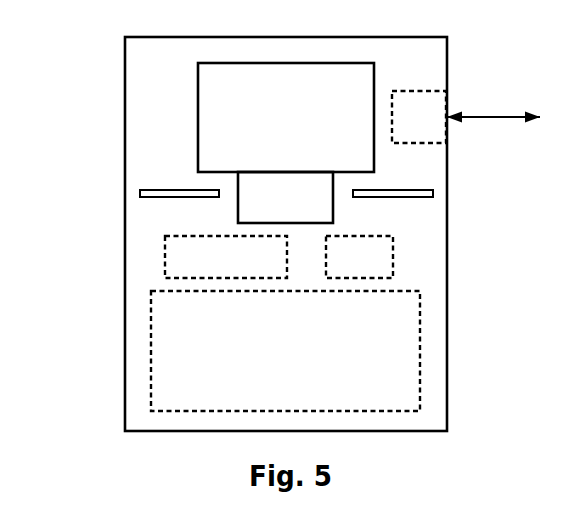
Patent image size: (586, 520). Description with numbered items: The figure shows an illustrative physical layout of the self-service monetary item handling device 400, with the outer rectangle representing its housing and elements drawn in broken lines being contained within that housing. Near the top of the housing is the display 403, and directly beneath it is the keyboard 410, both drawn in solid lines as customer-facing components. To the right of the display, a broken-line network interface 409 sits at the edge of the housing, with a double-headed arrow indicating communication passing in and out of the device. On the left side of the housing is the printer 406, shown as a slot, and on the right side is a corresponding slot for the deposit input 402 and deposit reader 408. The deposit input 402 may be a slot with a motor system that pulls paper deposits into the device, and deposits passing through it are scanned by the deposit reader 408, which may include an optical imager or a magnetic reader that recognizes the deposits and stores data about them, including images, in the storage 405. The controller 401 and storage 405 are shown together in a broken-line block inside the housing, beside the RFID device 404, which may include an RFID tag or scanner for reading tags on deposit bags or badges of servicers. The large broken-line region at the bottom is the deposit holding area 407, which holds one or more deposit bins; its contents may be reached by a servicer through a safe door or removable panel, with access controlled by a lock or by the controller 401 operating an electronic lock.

The self-service monetary item handling device 400 is at (124, 57).
The display 403 is at (304, 128).
The keyboard 410 is at (304, 210).
The network interface 409 is at (439, 128).
The printer 406 is at (124, 190).
The deposit input 402 is at (461, 198).
The deposit reader 408 is at (434, 193).
The controller 401 is at (226, 257).
The storage 405 is at (265, 266).
The RFID device 404 is at (379, 266).
The deposit holding area 407 is at (304, 362).